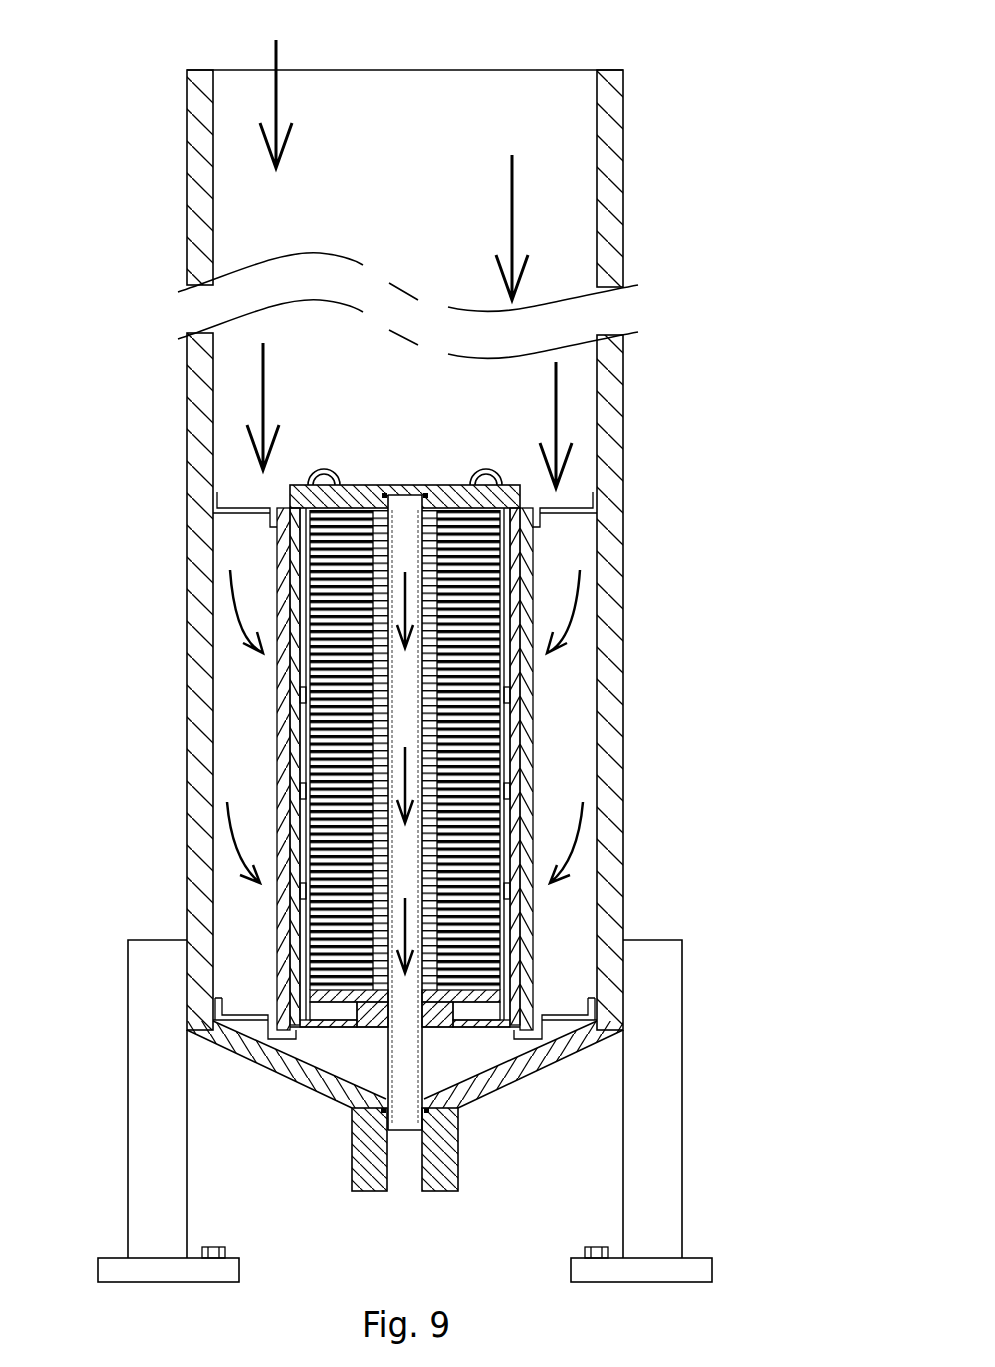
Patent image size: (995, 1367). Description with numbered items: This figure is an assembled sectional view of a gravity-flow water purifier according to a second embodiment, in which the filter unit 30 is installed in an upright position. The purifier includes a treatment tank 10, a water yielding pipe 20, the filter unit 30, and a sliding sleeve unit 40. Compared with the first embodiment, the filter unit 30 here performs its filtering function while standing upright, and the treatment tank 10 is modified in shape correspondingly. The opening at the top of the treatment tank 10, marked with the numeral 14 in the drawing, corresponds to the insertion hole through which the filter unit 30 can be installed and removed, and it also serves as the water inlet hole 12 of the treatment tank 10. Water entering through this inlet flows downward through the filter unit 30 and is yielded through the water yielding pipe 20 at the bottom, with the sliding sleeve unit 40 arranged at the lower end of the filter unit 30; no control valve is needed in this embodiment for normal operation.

The treatment tank 10 is at (187, 420).
The water inlet hole 12 is at (408, 214).
The inlet opening 14 is at (398, 83).
The water yielding pipe 20 is at (429, 1058).
The filter unit 30 is at (487, 713).
The sliding sleeve unit 40 is at (341, 1029).